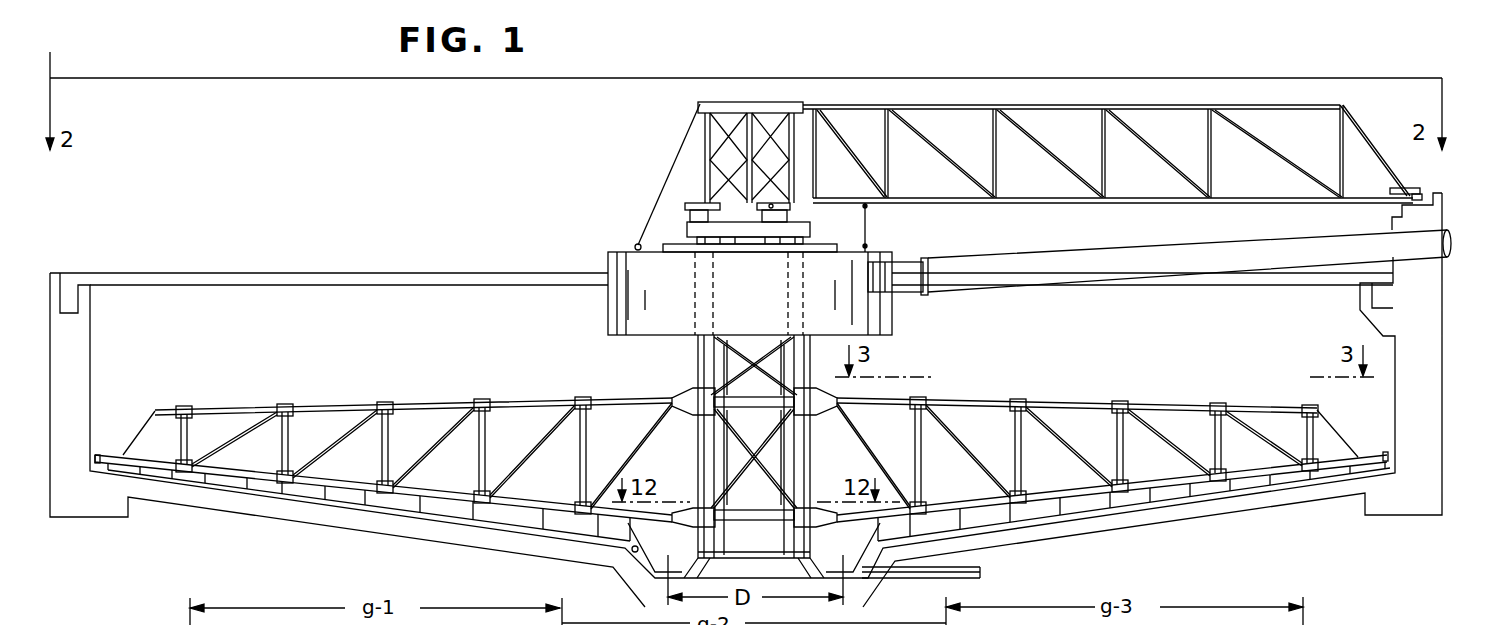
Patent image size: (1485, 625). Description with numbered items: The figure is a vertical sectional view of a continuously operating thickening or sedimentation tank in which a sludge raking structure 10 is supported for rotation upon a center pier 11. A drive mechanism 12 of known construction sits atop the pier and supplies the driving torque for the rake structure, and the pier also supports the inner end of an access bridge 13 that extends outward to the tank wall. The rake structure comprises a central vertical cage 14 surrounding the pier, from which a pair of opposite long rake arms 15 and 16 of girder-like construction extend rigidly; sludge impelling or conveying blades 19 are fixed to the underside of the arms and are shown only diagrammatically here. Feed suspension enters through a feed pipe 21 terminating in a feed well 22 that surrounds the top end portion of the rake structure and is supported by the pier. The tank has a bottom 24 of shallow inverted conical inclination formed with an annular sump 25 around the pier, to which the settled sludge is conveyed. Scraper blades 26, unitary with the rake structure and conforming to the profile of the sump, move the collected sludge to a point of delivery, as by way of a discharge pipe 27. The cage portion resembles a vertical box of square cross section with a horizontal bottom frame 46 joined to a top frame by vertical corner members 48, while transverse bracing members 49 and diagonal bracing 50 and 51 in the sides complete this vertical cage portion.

The sludge raking structure 10 is at (596, 373).
The center pier 11 is at (762, 429).
The drive mechanism 12 is at (693, 207).
The access bridge 13 is at (1013, 203).
The cage 14 is at (698, 347).
The long rake arm 15 is at (340, 407).
The long rake arm 16 is at (1140, 404).
The blades 19 is at (995, 515).
The feed pipe 21 is at (1024, 275).
The feed well 22 is at (877, 320).
The bottom 24 is at (283, 503).
The annular sump 25 is at (633, 551).
The scraper blades 26 is at (678, 558).
The discharge pipe 27 is at (980, 572).
The horizontal bottom frame 46 is at (751, 523).
The vertical corner members 48 is at (750, 456).
The transverse bracing members 49 is at (737, 397).
The diagonal bracing 50 is at (747, 340).
The diagonal bracing 51 is at (768, 448).